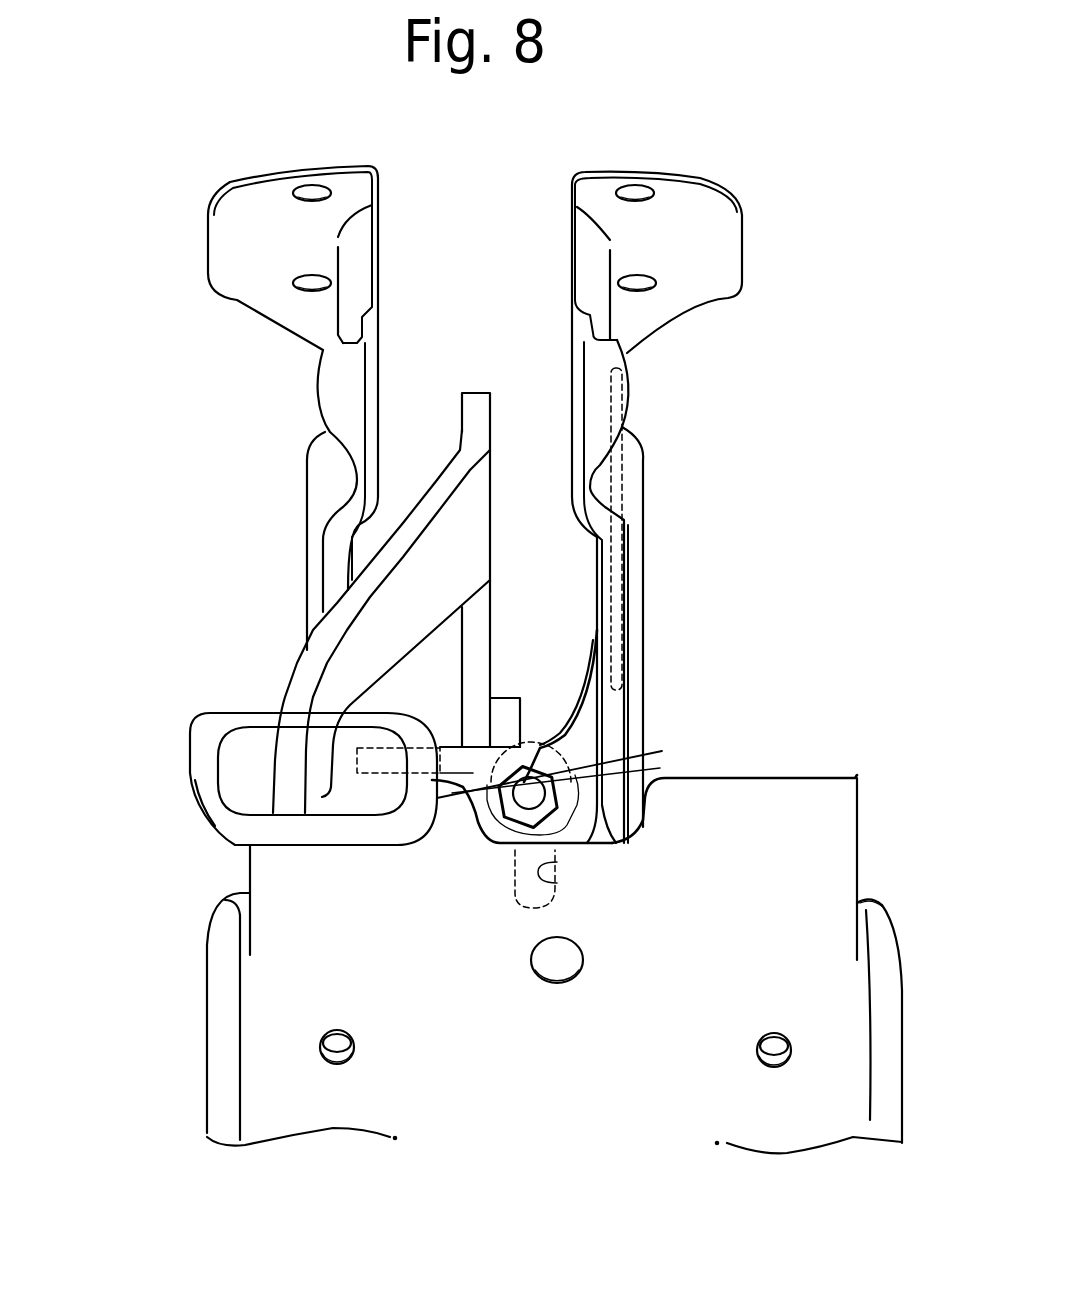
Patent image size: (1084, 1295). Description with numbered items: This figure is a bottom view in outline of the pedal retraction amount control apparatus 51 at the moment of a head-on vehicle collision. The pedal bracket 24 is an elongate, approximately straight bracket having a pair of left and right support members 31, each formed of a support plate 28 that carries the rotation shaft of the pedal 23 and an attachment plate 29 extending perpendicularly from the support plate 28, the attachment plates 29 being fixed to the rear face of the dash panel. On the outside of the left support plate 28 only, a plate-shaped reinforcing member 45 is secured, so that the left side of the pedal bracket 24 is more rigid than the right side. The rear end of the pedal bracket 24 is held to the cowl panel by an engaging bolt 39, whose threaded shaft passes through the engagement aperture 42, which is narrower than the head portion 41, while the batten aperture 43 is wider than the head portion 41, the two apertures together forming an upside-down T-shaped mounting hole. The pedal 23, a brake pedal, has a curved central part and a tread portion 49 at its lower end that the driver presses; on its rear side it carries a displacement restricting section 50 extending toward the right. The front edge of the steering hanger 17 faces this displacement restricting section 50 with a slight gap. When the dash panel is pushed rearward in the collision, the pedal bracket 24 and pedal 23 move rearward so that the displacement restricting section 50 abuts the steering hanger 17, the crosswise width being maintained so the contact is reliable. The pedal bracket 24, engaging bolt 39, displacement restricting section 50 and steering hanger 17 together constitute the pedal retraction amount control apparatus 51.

The steering hanger 17 is at (215, 875).
The pedal 23 is at (470, 360).
The pedal bracket 24 is at (715, 148).
The support plate 28 is at (687, 800).
The attachment plate 29 is at (252, 242).
The support member 31 is at (205, 160).
The engaging bolt 39 is at (488, 862).
The head portion 41 is at (602, 768).
The engagement aperture 42 is at (550, 890).
The batten aperture 43 is at (662, 751).
The reinforcing member 45 is at (623, 483).
The tread portion 49 is at (213, 823).
The displacement restricting section 50 is at (443, 744).
The pedal retraction amount control apparatus 51 is at (423, 862).